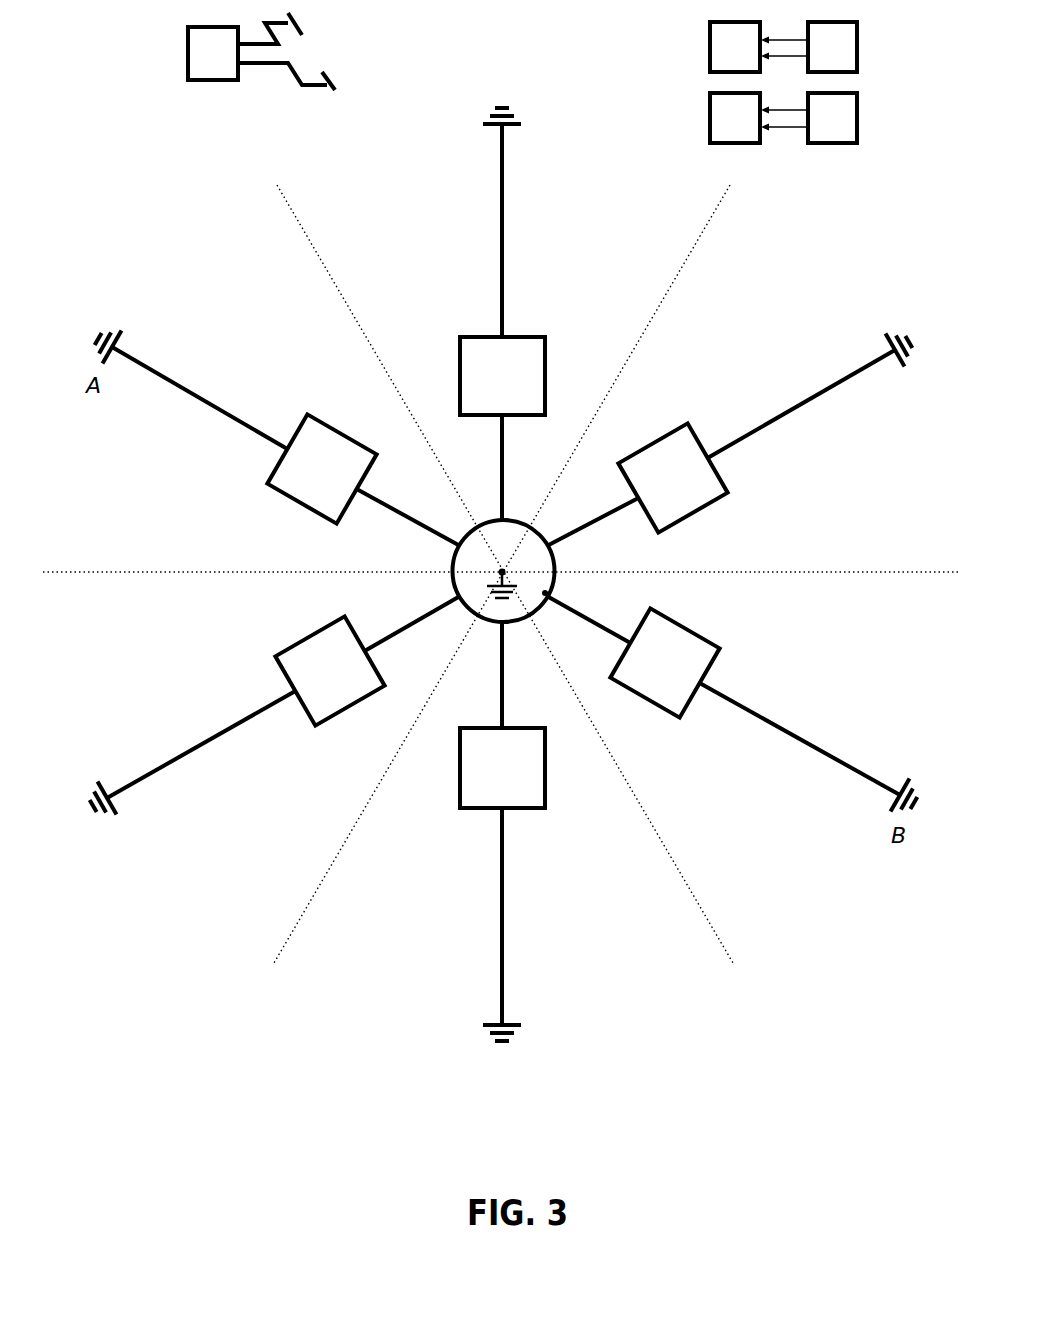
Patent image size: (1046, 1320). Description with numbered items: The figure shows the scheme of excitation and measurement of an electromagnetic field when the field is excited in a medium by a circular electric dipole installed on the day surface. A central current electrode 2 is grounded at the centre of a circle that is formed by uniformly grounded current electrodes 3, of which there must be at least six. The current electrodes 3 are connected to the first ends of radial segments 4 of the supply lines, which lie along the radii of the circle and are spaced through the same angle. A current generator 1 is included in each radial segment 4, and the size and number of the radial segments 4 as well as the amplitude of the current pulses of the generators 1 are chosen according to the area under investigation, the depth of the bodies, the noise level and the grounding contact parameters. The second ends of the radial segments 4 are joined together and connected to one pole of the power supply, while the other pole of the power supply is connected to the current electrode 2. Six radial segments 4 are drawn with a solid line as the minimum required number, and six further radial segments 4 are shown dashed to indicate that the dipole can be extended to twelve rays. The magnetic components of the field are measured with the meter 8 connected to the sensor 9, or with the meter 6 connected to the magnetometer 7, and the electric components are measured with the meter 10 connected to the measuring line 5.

The current generator 1 is at (497, 572).
The current electrode 2 is at (504, 571).
The current electrodes 3 is at (501, 579).
The radial segments 4 is at (503, 574).
The measuring line 5 is at (286, 51).
The meter 6 is at (735, 118).
The magnetometer 7 is at (832, 118).
The meter 8 is at (735, 47).
The sensor 9 is at (832, 47).
The meter 10 is at (213, 53).